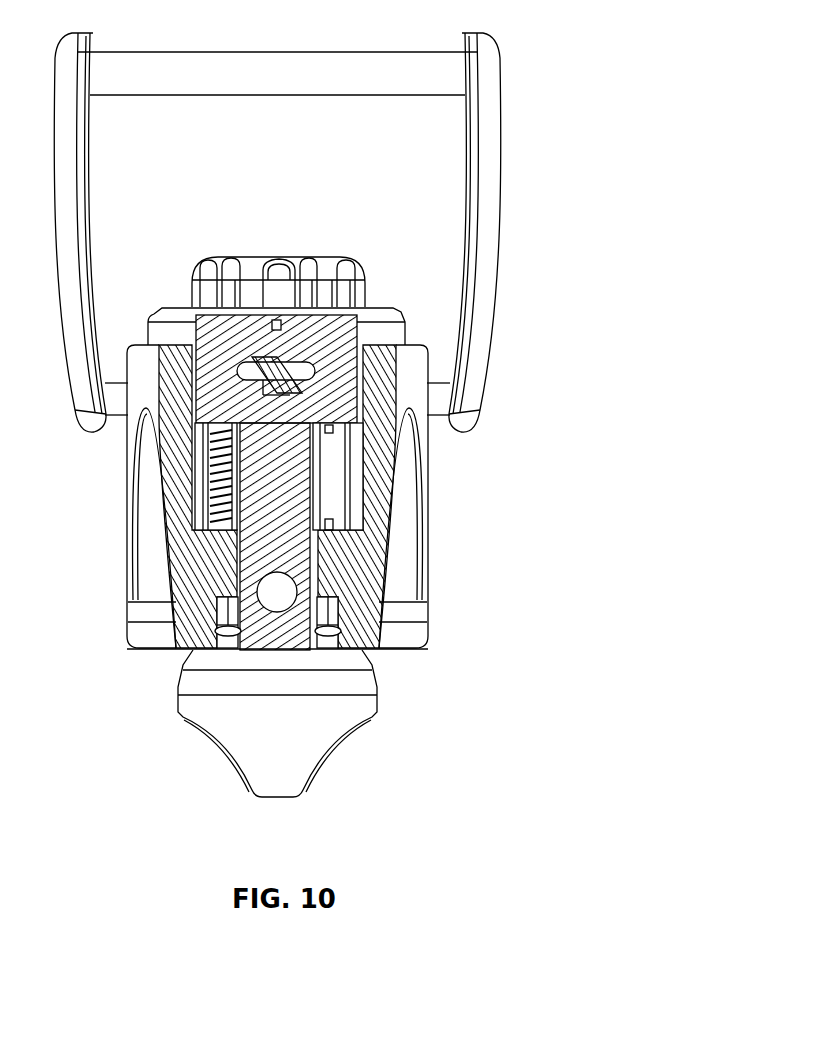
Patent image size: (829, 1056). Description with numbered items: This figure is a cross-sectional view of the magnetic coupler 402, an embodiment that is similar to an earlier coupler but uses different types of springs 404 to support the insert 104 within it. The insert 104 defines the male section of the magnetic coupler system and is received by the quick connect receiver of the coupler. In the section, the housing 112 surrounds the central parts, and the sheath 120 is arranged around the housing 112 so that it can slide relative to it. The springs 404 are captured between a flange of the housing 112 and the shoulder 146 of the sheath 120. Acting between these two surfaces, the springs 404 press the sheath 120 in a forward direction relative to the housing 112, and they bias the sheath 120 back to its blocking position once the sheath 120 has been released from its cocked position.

The magnetic coupler 402 is at (552, 174).
The housing 112 is at (390, 332).
The insert 104 is at (337, 427).
The springs 404 is at (218, 480).
The shoulder 146 is at (340, 528).
The sheath 120 is at (407, 573).